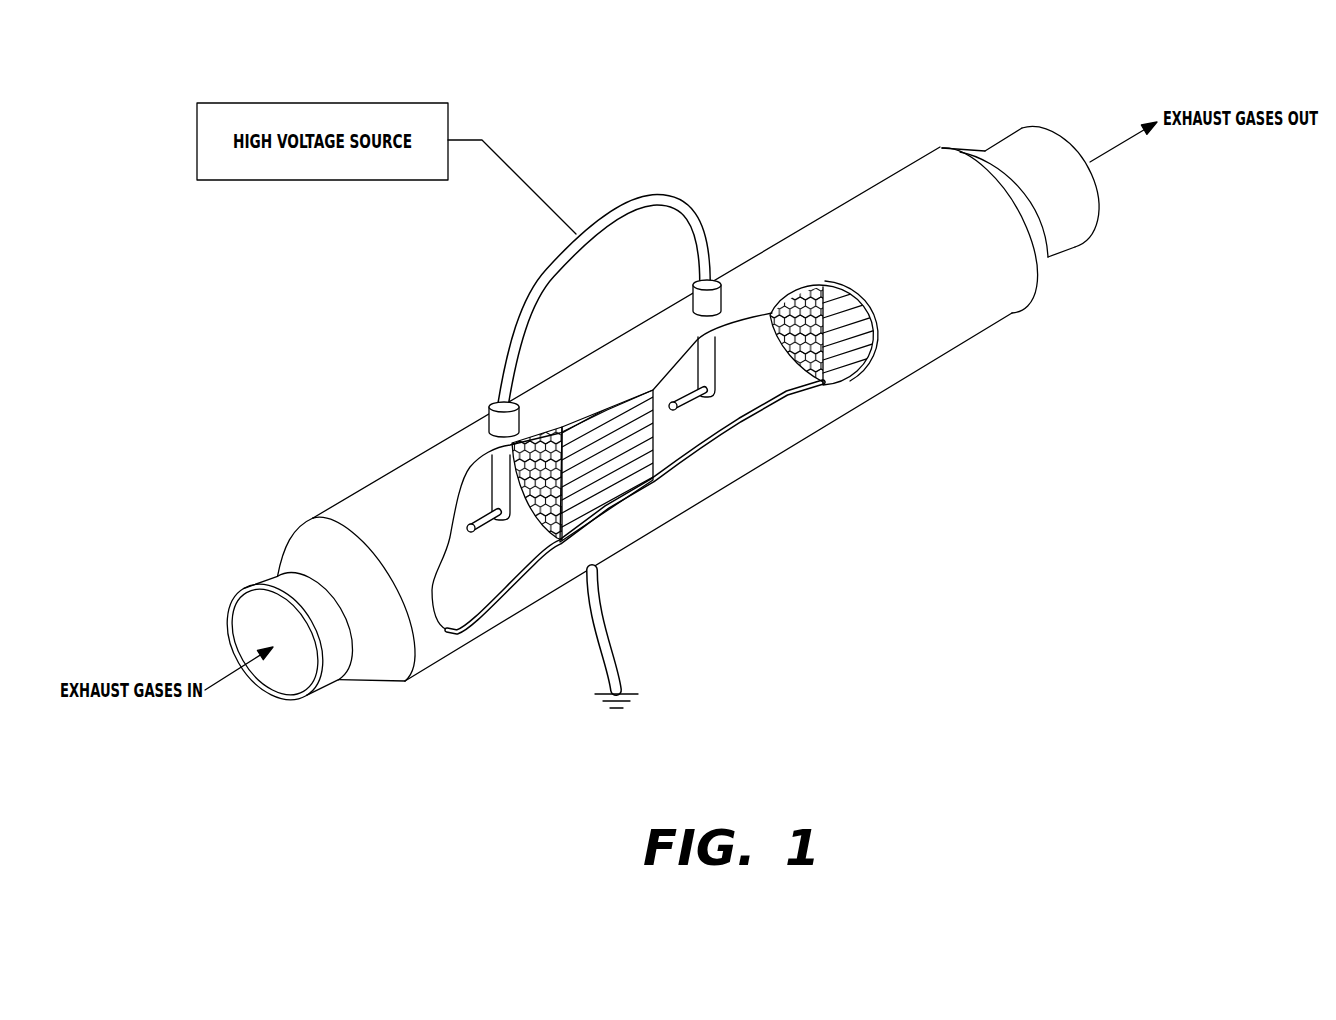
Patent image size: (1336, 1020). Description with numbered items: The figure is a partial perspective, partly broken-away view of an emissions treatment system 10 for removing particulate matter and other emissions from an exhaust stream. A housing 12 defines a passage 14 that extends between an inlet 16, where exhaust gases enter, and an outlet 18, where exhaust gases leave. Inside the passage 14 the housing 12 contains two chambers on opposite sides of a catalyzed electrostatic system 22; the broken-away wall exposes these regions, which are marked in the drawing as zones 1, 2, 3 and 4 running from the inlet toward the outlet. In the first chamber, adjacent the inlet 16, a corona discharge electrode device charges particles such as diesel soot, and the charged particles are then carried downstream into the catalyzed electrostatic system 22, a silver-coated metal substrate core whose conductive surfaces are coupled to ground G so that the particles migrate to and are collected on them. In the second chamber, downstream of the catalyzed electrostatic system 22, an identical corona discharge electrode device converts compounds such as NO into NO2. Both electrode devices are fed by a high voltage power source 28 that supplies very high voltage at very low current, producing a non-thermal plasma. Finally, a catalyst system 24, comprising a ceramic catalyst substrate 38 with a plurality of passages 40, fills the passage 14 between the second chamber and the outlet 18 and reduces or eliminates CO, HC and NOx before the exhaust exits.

The emissions treatment system 10 is at (659, 413).
The housing 12 is at (868, 200).
The passage 14 is at (450, 615).
The inlet 16 is at (252, 713).
The outlet 18 is at (1084, 117).
The catalyzed electrostatic system 22 is at (623, 487).
The catalyst system 24 is at (849, 309).
The high voltage power source 28 is at (632, 202).
The catalyst substrate 38 is at (870, 314).
The passages 40 is at (794, 291).
The ground G is at (621, 678).
The zone 1 is at (461, 568).
The zone 2 is at (579, 464).
The zone 3 is at (676, 437).
The zone 4 is at (854, 328).